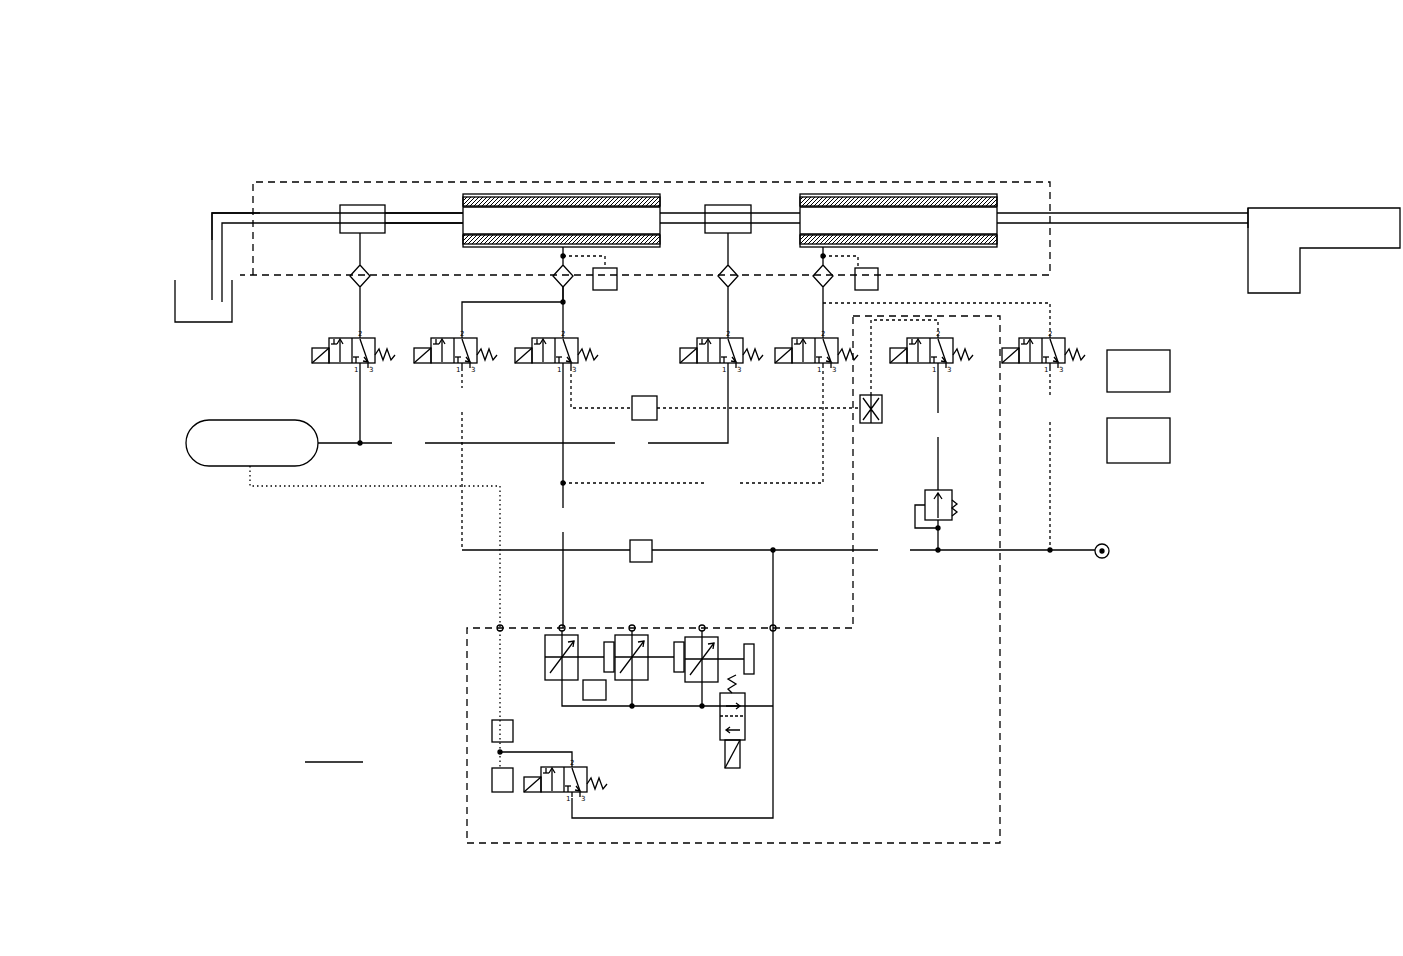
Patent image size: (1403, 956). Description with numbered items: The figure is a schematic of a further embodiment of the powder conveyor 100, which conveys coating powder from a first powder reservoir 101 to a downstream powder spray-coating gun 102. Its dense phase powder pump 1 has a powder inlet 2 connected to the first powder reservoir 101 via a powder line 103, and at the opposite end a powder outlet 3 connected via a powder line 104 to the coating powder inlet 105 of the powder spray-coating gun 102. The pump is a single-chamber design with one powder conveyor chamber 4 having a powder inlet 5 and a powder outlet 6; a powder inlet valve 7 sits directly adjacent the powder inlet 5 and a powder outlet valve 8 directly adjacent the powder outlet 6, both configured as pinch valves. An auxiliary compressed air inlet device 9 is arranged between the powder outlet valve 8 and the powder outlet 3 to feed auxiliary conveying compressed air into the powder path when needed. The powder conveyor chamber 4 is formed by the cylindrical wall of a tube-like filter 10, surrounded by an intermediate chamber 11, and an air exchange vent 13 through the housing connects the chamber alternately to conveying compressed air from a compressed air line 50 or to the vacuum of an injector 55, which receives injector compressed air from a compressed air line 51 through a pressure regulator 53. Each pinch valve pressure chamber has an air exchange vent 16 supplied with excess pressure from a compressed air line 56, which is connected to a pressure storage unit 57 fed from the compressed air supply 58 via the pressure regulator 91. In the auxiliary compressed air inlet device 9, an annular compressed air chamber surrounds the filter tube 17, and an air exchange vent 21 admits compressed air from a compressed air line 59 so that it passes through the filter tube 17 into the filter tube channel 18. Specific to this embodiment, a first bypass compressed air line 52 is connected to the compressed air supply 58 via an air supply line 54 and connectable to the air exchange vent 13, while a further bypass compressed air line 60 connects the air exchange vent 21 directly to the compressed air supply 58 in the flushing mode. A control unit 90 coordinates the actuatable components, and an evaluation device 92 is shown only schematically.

The powder conveyor 100 is at (522, 40).
The dense phase powder pump 1 is at (292, 182).
The powder inlet 2 is at (250, 212).
The powder outlet 3 is at (1054, 214).
The powder conveyor chamber 4 is at (540, 168).
The powder inlet 5 is at (455, 212).
The powder outlet 6 is at (676, 212).
The powder inlet valve 7 is at (368, 208).
The powder outlet valve 8 is at (741, 207).
The auxiliary compressed air inlet device 9 is at (898, 168).
The tube-like filter 10 is at (603, 207).
The intermediate chamber 11 is at (494, 204).
The air exchange vent 13 is at (560, 248).
The air exchange vent 16 is at (360, 234).
The filter tube 17 is at (913, 208).
The filter tube channel 18 is at (882, 214).
The air exchange vent 21 is at (823, 247).
The compressed air line 50 is at (560, 498).
The compressed air line 51 is at (940, 459).
The first bypass compressed air line 52 is at (458, 459).
The pressure regulator 53 is at (952, 510).
The air supply line 54 is at (778, 550).
The injector 55 is at (899, 385).
The compressed air line 56 is at (523, 411).
The pressure storage unit 57 is at (343, 594).
The compressed air supply 58 is at (1110, 560).
The compressed air line 59 is at (692, 431).
The further bypass compressed air line 60 is at (1050, 459).
The control unit 90 is at (1150, 457).
The pressure regulator 91 is at (785, 579).
The evaluation device 92 is at (1150, 386).
The first powder reservoir 101 is at (187, 275).
The powder spray-coating gun 102 is at (1290, 222).
The powder line 103 is at (208, 214).
The powder line 104 is at (1103, 218).
The coating powder inlet 105 is at (1250, 213).